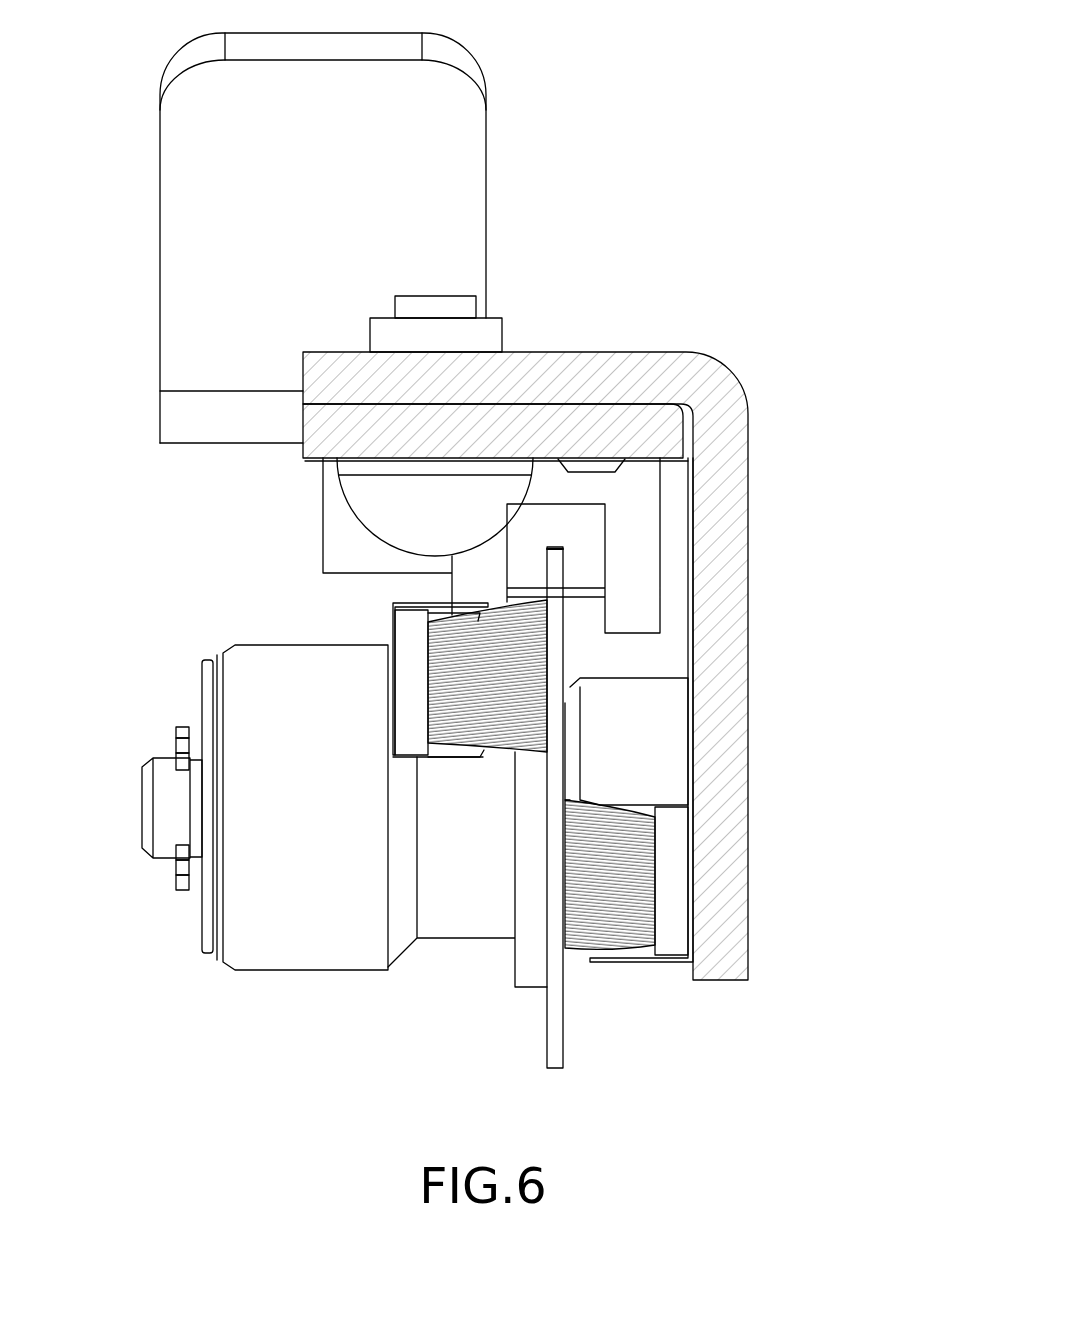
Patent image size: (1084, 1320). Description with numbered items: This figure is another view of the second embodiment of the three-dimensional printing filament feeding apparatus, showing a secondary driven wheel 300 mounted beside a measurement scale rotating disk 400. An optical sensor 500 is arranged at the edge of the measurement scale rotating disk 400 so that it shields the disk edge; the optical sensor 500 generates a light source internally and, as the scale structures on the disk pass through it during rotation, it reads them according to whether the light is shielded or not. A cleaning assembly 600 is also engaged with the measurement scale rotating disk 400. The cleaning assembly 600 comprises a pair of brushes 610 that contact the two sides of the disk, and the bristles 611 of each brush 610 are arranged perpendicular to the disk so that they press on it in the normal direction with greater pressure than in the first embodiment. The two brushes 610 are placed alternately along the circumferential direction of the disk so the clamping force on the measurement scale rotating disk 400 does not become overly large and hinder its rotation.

The secondary driven wheel 300 is at (288, 943).
The measurement scale rotating disk 400 is at (555, 1035).
The optical sensor 500 is at (637, 548).
The cleaning assembly 600 is at (632, 969).
The brush 610 is at (412, 632).
The bristles 611 is at (450, 635).